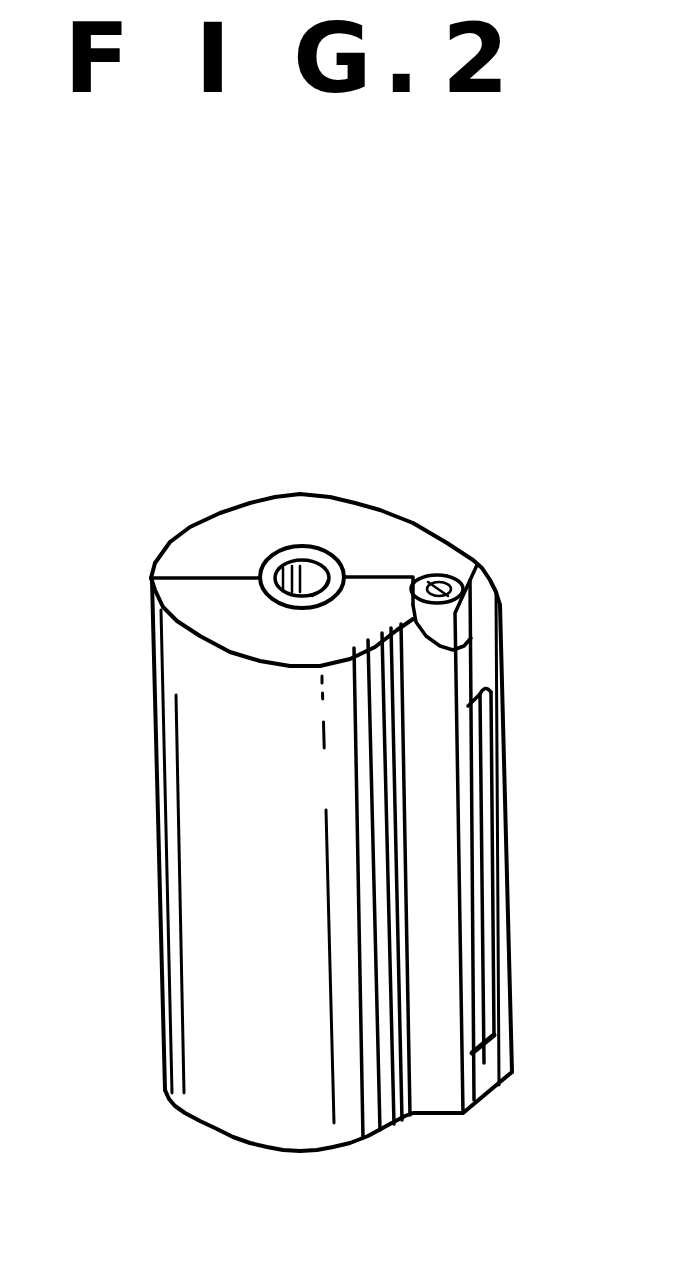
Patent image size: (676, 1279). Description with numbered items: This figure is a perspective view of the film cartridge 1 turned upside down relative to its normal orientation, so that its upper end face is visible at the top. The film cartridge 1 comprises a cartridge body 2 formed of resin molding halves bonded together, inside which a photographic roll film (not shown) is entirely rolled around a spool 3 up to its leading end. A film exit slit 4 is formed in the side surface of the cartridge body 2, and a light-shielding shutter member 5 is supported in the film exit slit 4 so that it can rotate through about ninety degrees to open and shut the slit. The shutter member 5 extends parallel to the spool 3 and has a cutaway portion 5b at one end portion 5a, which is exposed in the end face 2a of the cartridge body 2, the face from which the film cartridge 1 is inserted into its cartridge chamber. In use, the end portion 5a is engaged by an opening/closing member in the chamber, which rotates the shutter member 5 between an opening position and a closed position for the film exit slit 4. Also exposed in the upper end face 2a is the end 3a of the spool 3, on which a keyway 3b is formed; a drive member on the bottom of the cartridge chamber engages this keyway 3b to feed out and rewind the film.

The film cartridge 1 is at (494, 525).
The cartridge body 2 is at (193, 855).
The end face 2a is at (287, 510).
The spool 3 is at (252, 549).
The end of the spool 3a is at (318, 553).
The keyway 3b is at (318, 605).
The film exit slit 4 is at (475, 779).
The light-shielding shutter member 5 is at (477, 881).
The end portion 5a is at (413, 651).
The cutaway portion 5b is at (477, 563).